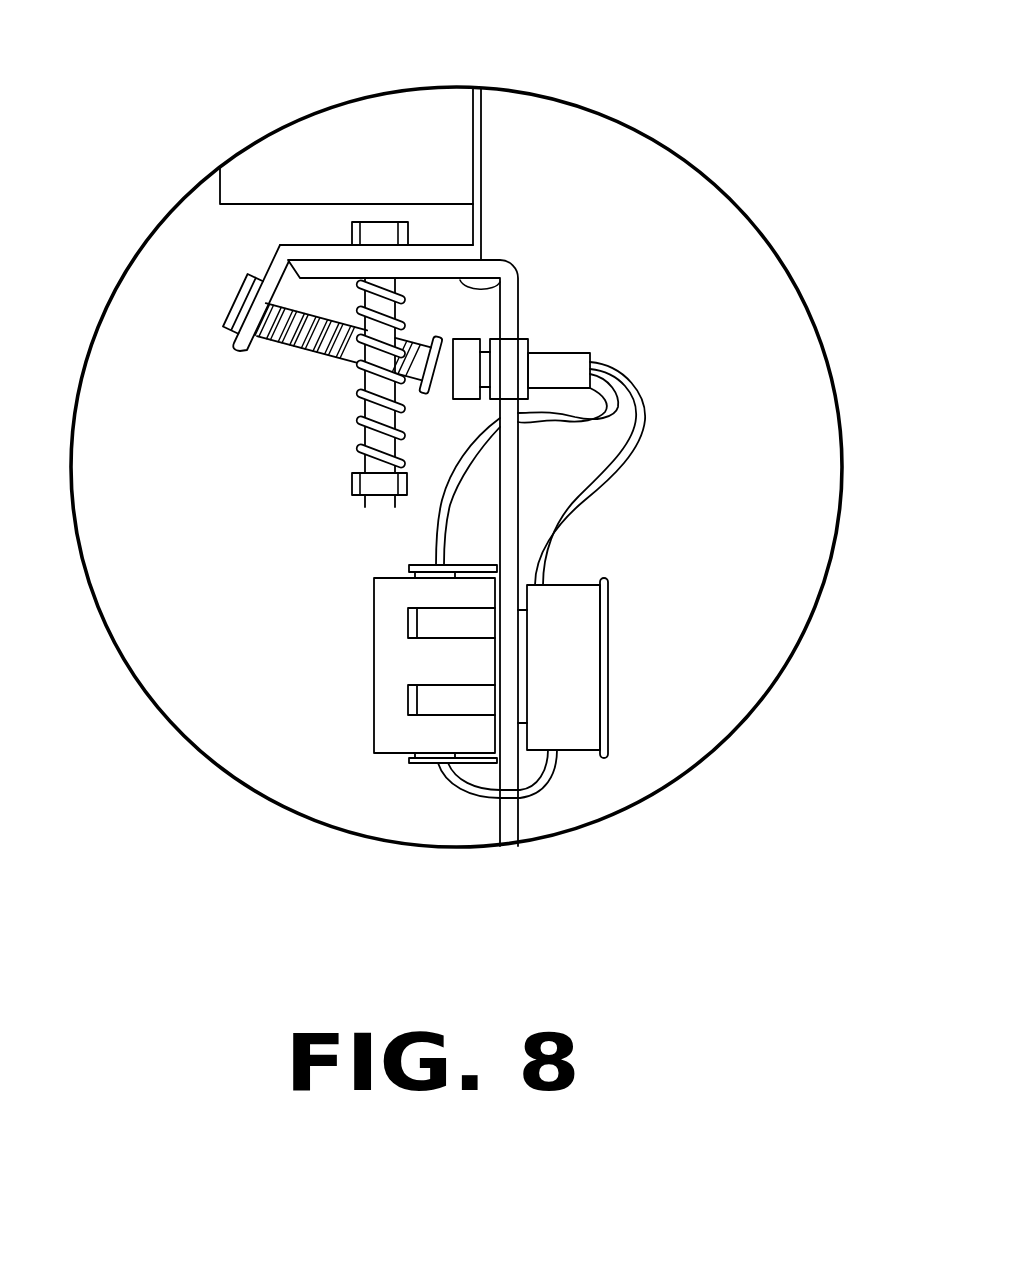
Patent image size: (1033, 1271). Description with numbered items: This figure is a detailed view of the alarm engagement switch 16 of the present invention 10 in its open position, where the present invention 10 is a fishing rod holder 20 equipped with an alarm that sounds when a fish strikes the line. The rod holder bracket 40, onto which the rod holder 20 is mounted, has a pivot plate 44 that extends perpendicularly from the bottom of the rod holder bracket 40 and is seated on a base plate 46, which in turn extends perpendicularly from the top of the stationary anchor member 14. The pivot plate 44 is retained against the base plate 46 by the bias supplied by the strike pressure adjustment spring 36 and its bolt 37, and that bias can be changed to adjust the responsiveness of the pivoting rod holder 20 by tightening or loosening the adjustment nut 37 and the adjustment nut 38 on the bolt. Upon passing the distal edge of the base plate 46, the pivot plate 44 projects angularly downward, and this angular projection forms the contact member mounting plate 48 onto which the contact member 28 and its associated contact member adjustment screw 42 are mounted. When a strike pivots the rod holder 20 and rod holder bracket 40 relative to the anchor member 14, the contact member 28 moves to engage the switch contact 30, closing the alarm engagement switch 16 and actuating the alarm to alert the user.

The present invention 10 is at (677, 123).
The anchor member 14 is at (520, 490).
The alarm engagement switch 16 is at (525, 233).
The fishing rod holder 20 is at (220, 188).
The contact member 28 is at (423, 390).
The switch contact 30 is at (472, 339).
The strike pressure adjustment spring 36 is at (358, 388).
The adjustment nut 37 is at (373, 222).
The adjustment nut 38 is at (353, 487).
The rod holder bracket 40 is at (482, 162).
The contact member adjustment screw 42 is at (307, 347).
The pivot plate 44 is at (262, 284).
The base plate 46 is at (502, 285).
The contact member mounting plate 48 is at (269, 273).